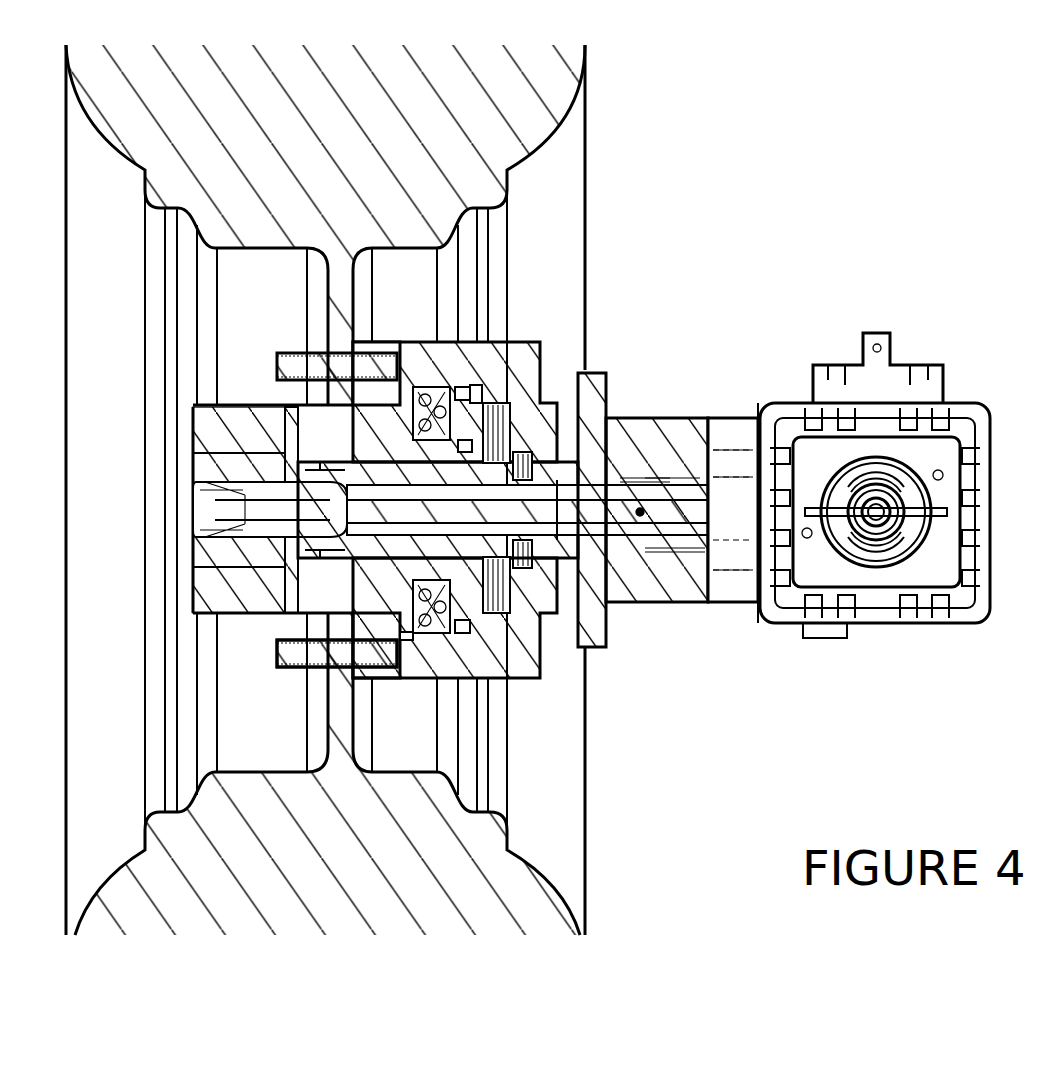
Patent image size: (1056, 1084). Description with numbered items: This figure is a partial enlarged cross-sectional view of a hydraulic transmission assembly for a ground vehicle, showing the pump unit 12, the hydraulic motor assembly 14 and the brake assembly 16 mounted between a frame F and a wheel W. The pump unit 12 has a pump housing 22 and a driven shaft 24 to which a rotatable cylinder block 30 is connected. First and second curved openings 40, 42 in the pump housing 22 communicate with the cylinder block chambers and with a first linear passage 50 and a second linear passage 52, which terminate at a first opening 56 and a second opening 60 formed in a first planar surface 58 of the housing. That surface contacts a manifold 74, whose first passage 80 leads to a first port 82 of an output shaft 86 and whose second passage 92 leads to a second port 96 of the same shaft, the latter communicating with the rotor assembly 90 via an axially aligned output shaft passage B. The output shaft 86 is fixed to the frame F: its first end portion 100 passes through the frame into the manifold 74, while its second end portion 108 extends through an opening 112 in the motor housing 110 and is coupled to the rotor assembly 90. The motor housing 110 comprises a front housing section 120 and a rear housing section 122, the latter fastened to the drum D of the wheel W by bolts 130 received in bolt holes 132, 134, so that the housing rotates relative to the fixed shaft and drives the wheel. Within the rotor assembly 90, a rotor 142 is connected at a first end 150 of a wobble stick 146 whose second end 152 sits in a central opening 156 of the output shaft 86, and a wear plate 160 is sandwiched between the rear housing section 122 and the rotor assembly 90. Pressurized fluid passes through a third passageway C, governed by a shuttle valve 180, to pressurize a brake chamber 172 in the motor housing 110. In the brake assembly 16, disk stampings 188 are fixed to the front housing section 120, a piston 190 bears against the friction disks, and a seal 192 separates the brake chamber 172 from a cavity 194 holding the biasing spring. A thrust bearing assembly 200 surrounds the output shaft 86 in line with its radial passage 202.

The pump unit 12 is at (905, 660).
The hydraulic motor assembly 14 is at (549, 326).
The brake assembly 16 is at (442, 652).
The pump housing 22 is at (985, 410).
The driven shaft 24 is at (892, 507).
The rotatable cylinder block 30 is at (957, 497).
The first curved opening 40 is at (890, 478).
The second curved opening 42 is at (902, 548).
The first linear passage 50 is at (817, 362).
The second linear passage 52 is at (787, 634).
The first opening 56 is at (757, 477).
The first planar surface 58 is at (752, 420).
The second opening 60 is at (757, 600).
The manifold 74 is at (685, 382).
The first passage 80 is at (733, 420).
The first port 82 is at (640, 505).
The output shaft 86 is at (568, 560).
The rotor assembly 90 is at (247, 636).
The second passage 92 is at (731, 425).
The second port 96 is at (685, 577).
The first end portion 100 is at (628, 560).
The second end portion 108 is at (351, 575).
The motor housing 110 is at (536, 690).
The opening 112 is at (565, 463).
The front housing section 120 is at (523, 350).
The rear housing section 122 is at (387, 345).
The bolts 130 is at (295, 352).
The bolt holes 132 is at (420, 657).
The bolt holes 134 is at (327, 703).
The rotor 142 is at (248, 452).
The wobble stick 146 is at (205, 507).
The first end 150 is at (195, 540).
The second end 152 is at (293, 562).
The central opening 156 is at (300, 464).
The wear plate 160 is at (272, 614).
The brake chamber 172 is at (483, 394).
The shuttle valve 180 is at (420, 557).
The disk stampings 188 is at (490, 616).
The piston 190 is at (450, 636).
The seal 192 is at (466, 386).
The cavity 194 is at (427, 385).
The thrust bearing assembly 200 is at (525, 455).
The radial passage 202 is at (533, 572).
The second axially aligned output shaft passage B is at (680, 495).
The third passageway C is at (660, 572).
The drum D is at (132, 333).
The frame F is at (615, 362).
The wheel W is at (530, 900).